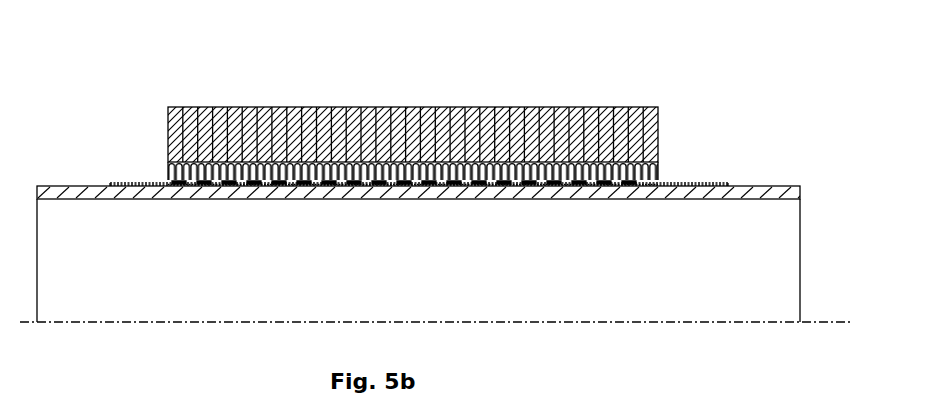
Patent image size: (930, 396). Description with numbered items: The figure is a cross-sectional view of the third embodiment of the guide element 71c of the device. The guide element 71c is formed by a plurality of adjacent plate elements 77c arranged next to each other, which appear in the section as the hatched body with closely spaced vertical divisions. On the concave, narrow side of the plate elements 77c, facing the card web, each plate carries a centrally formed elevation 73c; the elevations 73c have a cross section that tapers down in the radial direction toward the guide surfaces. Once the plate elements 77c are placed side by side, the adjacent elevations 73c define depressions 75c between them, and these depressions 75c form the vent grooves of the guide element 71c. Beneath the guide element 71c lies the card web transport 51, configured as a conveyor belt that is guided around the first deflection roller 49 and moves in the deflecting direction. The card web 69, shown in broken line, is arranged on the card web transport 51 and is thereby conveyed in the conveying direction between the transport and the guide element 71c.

The first deflection roller 49 is at (766, 187).
The card web transport 51 is at (710, 186).
The card web 69 is at (173, 182).
The guide element 71c is at (430, 107).
The elevations 73c is at (290, 186).
The depressions 75c is at (398, 186).
The plate elements 77c is at (293, 107).